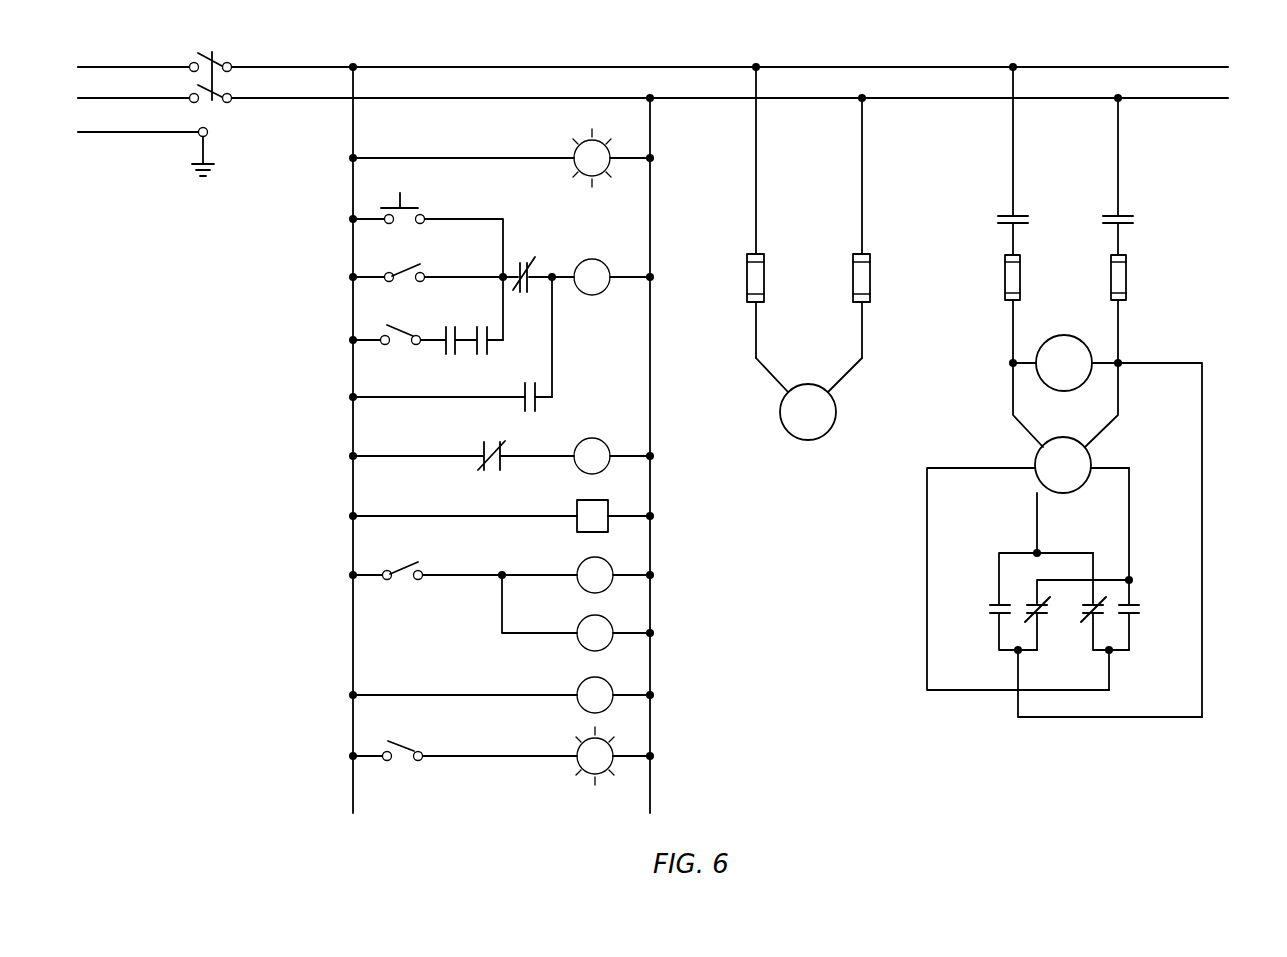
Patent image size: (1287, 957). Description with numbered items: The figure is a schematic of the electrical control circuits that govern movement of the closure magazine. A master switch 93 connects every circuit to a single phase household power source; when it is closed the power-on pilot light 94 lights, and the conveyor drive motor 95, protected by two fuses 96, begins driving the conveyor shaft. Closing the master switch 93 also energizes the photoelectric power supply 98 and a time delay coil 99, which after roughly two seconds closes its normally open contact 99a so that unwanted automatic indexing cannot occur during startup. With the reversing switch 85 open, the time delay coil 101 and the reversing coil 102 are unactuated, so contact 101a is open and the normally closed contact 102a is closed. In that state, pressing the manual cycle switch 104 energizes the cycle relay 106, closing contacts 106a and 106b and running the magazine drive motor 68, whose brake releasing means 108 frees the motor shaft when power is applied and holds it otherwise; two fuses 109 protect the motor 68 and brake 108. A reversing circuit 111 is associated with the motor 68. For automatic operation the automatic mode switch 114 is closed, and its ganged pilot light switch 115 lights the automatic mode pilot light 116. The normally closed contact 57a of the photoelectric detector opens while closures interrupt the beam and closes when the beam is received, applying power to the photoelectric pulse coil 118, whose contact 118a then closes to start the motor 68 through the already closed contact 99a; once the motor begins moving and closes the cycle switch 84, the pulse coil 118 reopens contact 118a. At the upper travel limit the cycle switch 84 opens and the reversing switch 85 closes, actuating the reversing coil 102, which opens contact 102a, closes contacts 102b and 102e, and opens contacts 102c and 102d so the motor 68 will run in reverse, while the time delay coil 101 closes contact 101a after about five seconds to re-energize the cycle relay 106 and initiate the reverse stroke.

The master switch 93 is at (212, 53).
The power-on pilot light 94 is at (572, 150).
The manual cycle switch 104 is at (404, 202).
The cycle switch 84 is at (404, 270).
The normally closed contact 102a is at (531, 250).
The cycle relay 106 is at (599, 259).
The automatic mode switch 114 is at (405, 330).
The contact 118a is at (440, 351).
The normally open contact 99a is at (489, 352).
The normally open contact 101a is at (522, 404).
The normally closed contact 57a is at (482, 445).
The photoelectric pulse coil 118 is at (576, 448).
The photoelectric light source and detector power supply 98 is at (577, 526).
The reversing switch 85 is at (402, 566).
The time delay coil 101 is at (576, 568).
The reversing coil 102 is at (576, 628).
The time delay coil 99 is at (576, 688).
The pilot light switch 115 is at (406, 746).
The automatic mode pilot light 116 is at (576, 750).
The fuses 96 is at (852, 277).
The conveyor drive motor 95 is at (808, 421).
The contact 106a is at (1018, 213).
The contact 106b is at (1123, 213).
The fuses 109 is at (1109, 277).
The brake releasing means 108 is at (1107, 526).
The magazine drive motor 68 is at (1054, 540).
The contact 102b is at (993, 602).
The contact 102c is at (1066, 630).
The contact 102d is at (1086, 601).
The contact 102e is at (1163, 588).
The reversing circuit 111 is at (1206, 572).